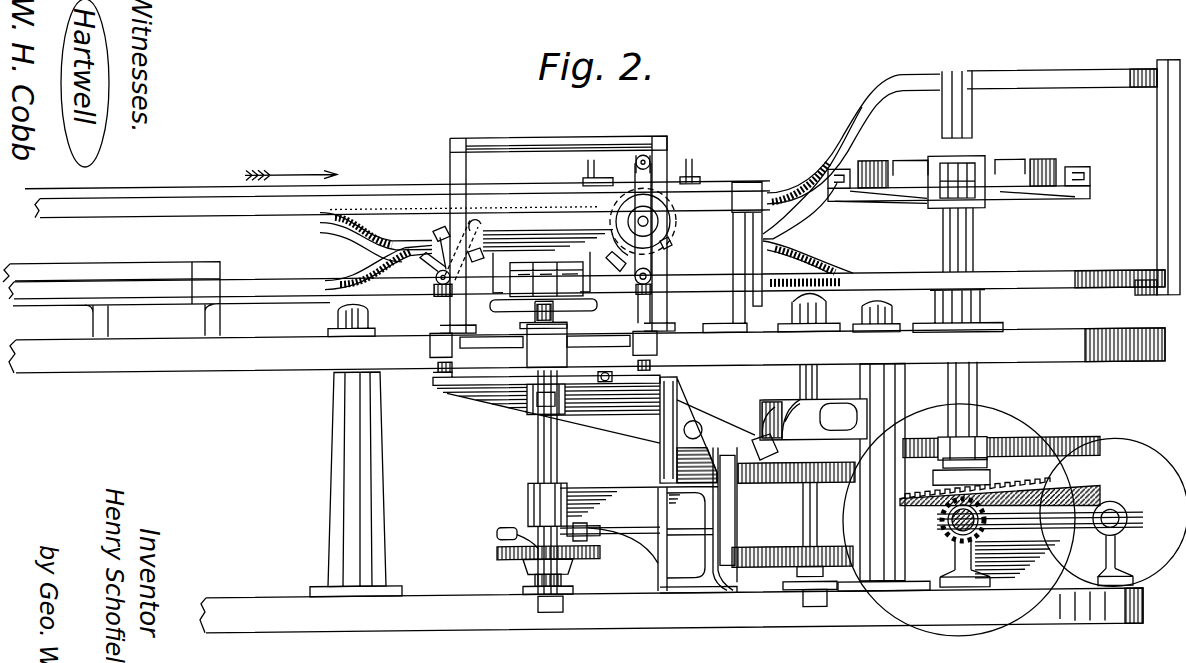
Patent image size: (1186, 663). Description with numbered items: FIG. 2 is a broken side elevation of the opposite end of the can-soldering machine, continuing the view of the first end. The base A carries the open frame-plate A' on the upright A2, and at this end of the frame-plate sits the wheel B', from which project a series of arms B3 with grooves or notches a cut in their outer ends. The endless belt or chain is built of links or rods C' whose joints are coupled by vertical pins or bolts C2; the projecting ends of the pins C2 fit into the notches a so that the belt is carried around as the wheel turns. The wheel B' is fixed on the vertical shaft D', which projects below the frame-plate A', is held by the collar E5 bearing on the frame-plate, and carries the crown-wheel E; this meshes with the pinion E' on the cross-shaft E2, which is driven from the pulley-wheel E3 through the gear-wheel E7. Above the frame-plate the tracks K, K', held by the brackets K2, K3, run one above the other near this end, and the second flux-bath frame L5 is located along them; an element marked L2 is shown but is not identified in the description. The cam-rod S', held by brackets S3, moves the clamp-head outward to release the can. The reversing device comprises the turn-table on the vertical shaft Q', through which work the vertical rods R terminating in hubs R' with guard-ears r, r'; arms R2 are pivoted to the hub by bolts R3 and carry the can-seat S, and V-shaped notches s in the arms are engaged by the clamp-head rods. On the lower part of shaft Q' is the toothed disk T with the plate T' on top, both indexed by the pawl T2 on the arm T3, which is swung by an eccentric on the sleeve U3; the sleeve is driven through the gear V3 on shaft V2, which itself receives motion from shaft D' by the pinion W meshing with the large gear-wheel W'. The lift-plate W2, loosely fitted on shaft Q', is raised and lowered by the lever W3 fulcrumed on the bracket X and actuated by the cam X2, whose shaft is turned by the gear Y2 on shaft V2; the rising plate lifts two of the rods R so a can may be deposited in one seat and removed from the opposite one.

The track K is at (591, 163).
The bracket K3 is at (950, 82).
The bracket K2 is at (1160, 178).
The track K' is at (587, 284).
The wheel B' is at (973, 195).
The arms B3 is at (885, 172).
The grooves or notches a is at (963, 177).
The cam-rod S' is at (558, 131).
The brackets S3 is at (447, 171).
The can-seat S is at (601, 266).
The V-shaped notches s is at (474, 233).
The vertical pin or bolt C2 is at (585, 180).
The link or rod C' is at (625, 166).
The crank disk L2 is at (662, 229).
The guard-ear r is at (427, 281).
The guard-ear r' is at (611, 263).
The vertical rods R is at (574, 299).
The arms R2 is at (495, 283).
The hub R' is at (537, 299).
The bolt R3 is at (597, 318).
The second flux-bath frame L5 is at (110, 270).
The frame-plate A' is at (587, 345).
The base A is at (671, 622).
The upright A2 is at (342, 458).
The collar E5 is at (985, 322).
The lift-plate W2 is at (474, 398).
The lever W3 is at (620, 437).
The vertical shaft Q' is at (537, 482).
The disk T is at (534, 568).
The pawl T2 is at (522, 570).
The arm T3 is at (505, 533).
The plate or disk T' is at (529, 540).
The bracket X is at (682, 424).
The cam X2 is at (775, 416).
The pinion W is at (750, 430).
The gear Y2 is at (746, 493).
The shaft V2 is at (808, 500).
The sleeve U3 is at (775, 577).
The gear V3 is at (722, 590).
The shaft D' is at (977, 399).
The large gear-wheel W' is at (1007, 450).
The crown-wheel E is at (1007, 480).
The pinion E' is at (949, 543).
The cross-shaft E2 is at (961, 544).
The gear-wheel E7 is at (1020, 434).
The pulley-wheel E3 is at (1145, 456).